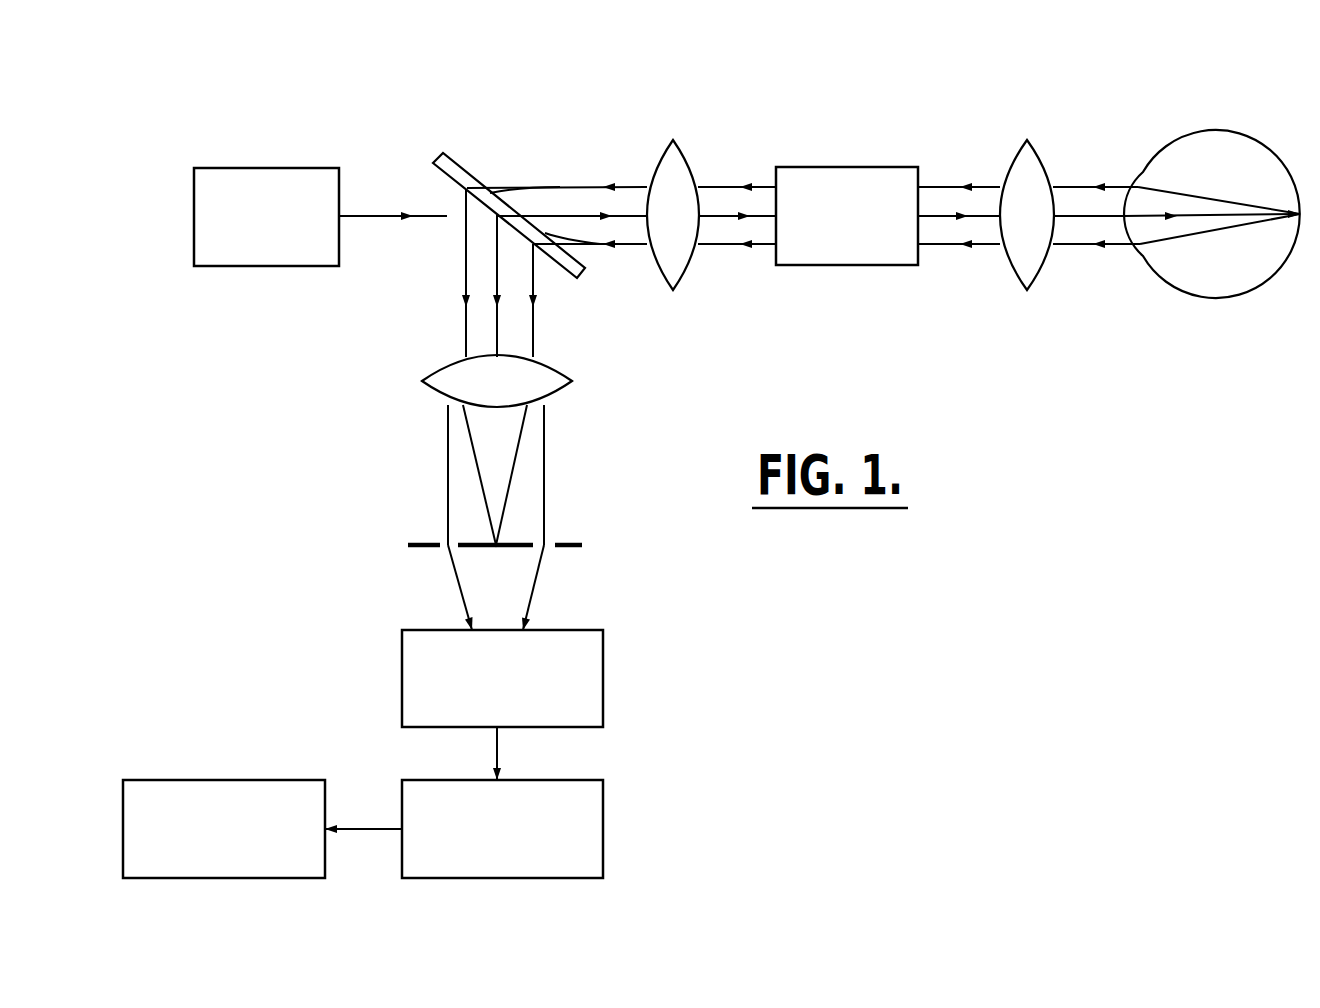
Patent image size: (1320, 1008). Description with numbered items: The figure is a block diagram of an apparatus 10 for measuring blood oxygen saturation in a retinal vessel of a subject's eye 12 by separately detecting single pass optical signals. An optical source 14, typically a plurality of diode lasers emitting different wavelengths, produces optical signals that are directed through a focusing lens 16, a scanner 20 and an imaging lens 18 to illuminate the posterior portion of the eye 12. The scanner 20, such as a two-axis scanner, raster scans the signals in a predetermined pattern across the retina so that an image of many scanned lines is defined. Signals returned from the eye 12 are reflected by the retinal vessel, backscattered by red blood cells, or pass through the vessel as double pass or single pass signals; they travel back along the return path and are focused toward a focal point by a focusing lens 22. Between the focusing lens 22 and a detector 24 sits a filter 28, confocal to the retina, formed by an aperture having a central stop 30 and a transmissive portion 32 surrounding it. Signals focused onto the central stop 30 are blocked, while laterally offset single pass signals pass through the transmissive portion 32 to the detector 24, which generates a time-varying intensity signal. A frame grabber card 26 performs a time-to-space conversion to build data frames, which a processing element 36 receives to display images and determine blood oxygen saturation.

The apparatus 10 is at (755, 82).
The eye 12 is at (1247, 141).
The optical source 14 is at (272, 168).
The focusing lens 16 is at (678, 157).
The imaging lens 18 is at (1032, 158).
The scanner 20 is at (865, 167).
The focusing lens 22 is at (550, 363).
The detector 24 is at (557, 629).
The frame grabber card 26 is at (553, 780).
The filter 28 is at (569, 546).
The central stop 30 is at (496, 545).
The transmissive portion 32 is at (443, 552).
The processing element 36 is at (222, 780).